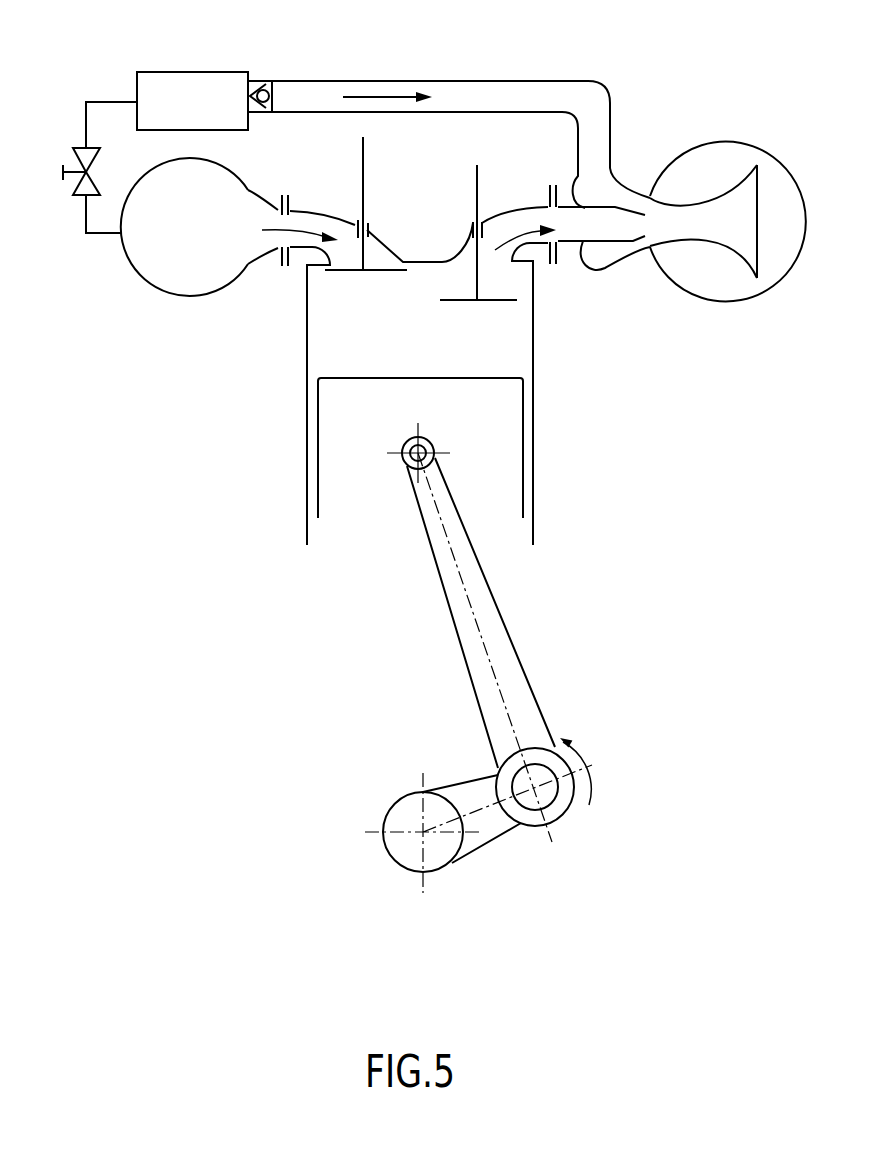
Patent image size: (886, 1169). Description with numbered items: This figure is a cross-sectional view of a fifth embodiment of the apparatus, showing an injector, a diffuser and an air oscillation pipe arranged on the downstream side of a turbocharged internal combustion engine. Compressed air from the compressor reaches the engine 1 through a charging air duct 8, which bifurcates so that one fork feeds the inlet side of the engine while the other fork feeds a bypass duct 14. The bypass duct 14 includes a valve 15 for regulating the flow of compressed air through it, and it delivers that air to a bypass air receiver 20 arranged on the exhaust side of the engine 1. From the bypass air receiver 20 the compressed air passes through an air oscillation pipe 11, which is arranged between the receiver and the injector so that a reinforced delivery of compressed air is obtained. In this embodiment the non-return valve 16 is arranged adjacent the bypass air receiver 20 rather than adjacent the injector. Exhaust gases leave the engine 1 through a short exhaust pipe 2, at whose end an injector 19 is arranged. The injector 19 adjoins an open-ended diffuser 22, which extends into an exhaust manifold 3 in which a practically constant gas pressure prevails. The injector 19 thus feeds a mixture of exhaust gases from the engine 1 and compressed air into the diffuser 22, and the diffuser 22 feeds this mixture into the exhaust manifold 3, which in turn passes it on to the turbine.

The engine 1 is at (305, 388).
The exhaust pipe 2 is at (522, 227).
The exhaust manifold 3 is at (722, 188).
The charging air duct 8 is at (200, 233).
The air oscillation pipe 11 is at (515, 107).
The bypass duct 14 is at (103, 237).
The valve 15 is at (70, 147).
The non-return valve 16 is at (250, 87).
The injector 19 is at (614, 236).
The bypass air receiver 20 is at (210, 116).
The diffuser 22 is at (754, 236).